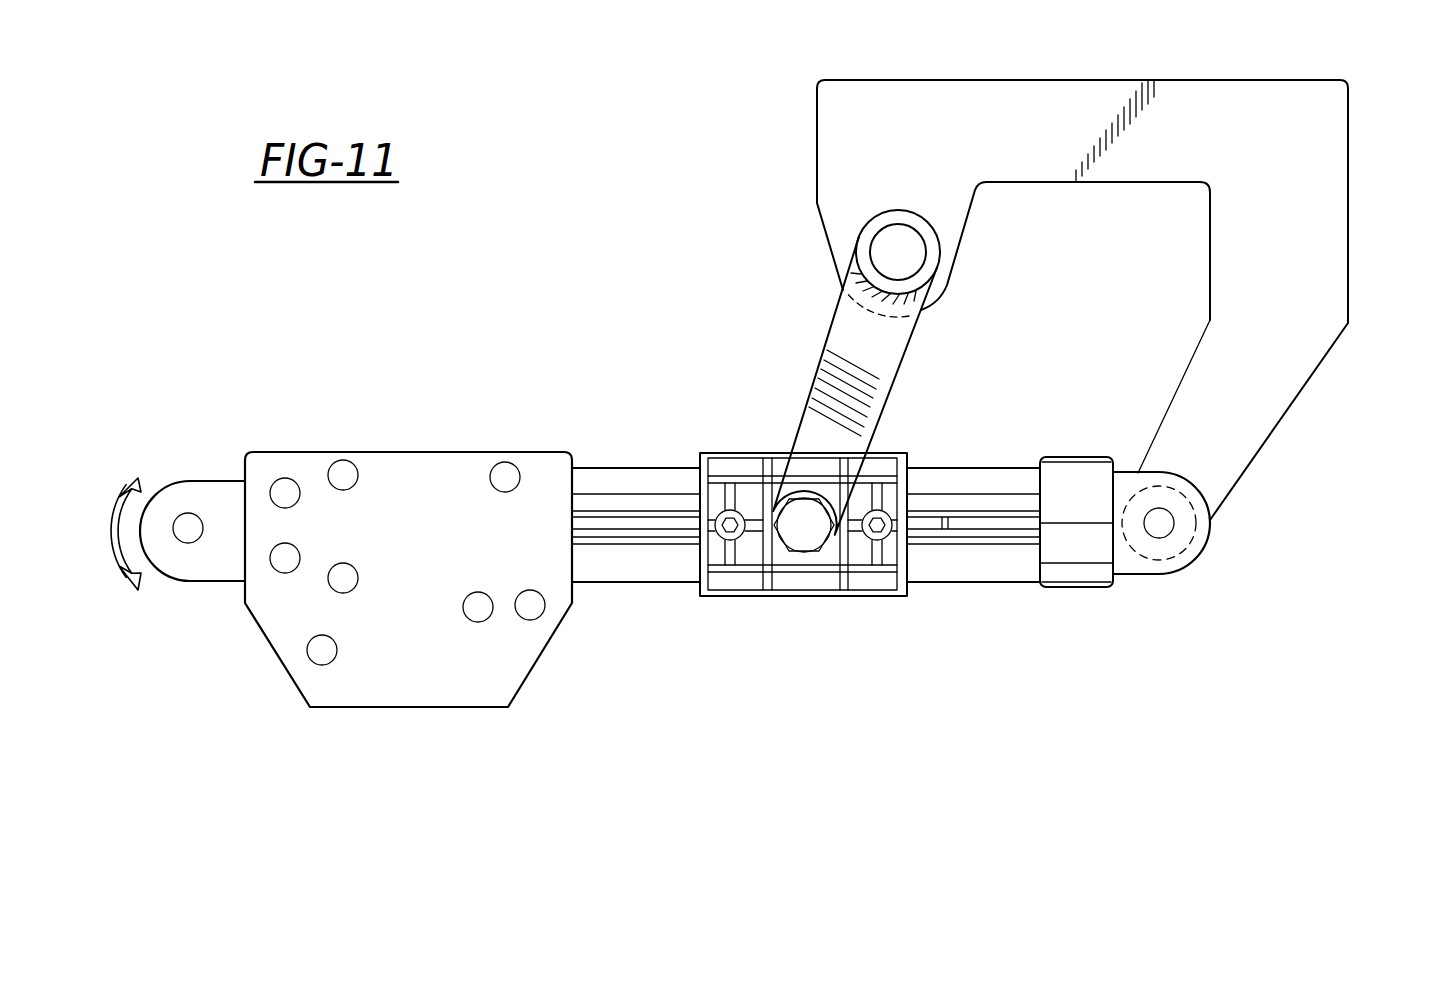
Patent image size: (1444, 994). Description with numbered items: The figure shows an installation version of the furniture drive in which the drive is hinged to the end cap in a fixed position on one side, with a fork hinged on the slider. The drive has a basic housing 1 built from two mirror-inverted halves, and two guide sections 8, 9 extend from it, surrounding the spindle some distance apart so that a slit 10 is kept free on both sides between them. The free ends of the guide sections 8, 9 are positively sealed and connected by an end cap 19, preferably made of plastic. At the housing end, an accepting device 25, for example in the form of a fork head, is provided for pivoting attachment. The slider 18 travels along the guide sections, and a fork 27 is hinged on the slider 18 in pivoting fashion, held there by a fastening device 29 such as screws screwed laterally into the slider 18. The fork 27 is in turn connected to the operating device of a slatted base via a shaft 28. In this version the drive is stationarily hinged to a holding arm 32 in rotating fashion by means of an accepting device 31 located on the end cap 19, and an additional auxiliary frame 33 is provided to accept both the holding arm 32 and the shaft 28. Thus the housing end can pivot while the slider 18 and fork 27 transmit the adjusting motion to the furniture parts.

The basic housing 1 is at (485, 687).
The guide section 8 is at (668, 477).
The guide section 9 is at (610, 568).
The slit 10 is at (600, 522).
The slider 18 is at (728, 590).
The end cap 19 is at (1063, 575).
The accepting device 25 is at (220, 490).
The fork 27 is at (828, 352).
The shaft 28 is at (866, 225).
The fastening device 29 is at (805, 542).
The accepting device 31 is at (1153, 577).
The holding arm 32 is at (1280, 398).
The auxiliary frame 33 is at (1100, 90).